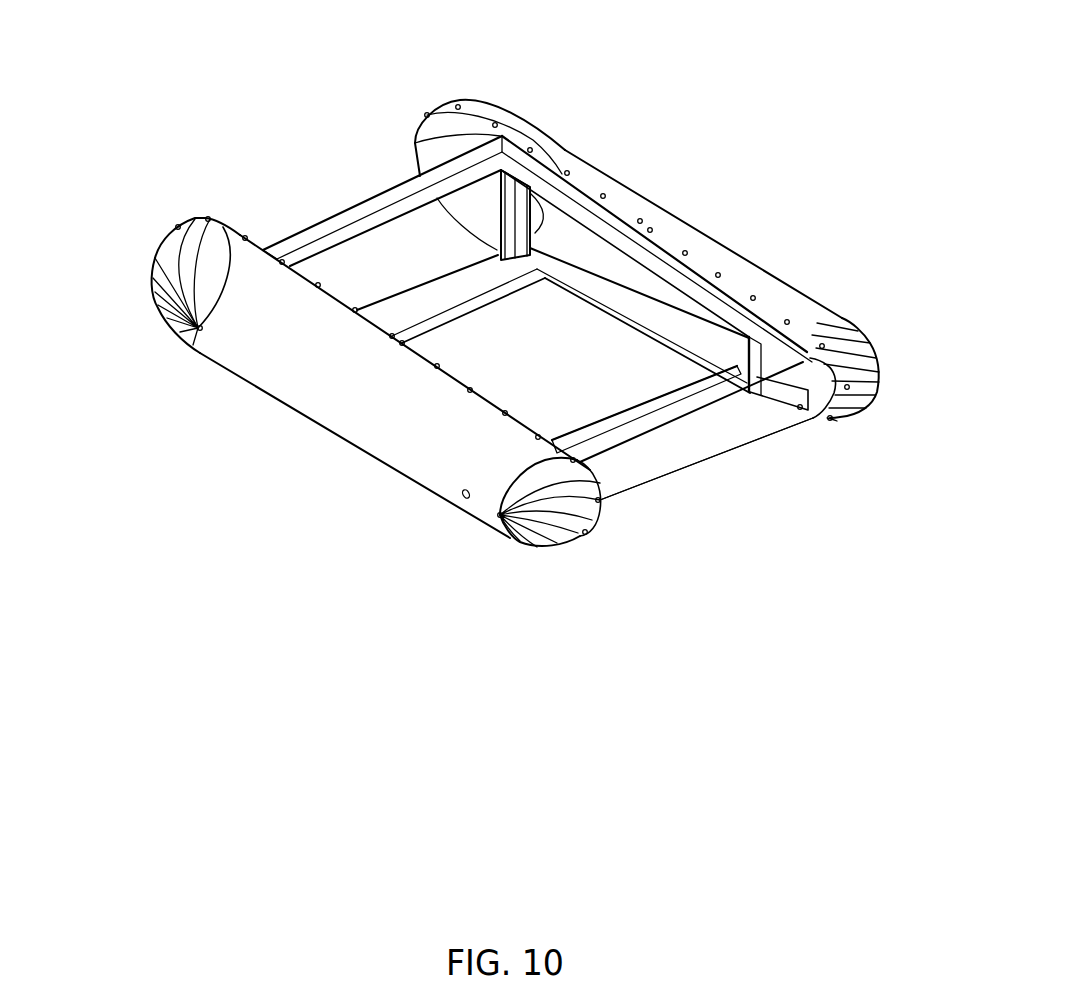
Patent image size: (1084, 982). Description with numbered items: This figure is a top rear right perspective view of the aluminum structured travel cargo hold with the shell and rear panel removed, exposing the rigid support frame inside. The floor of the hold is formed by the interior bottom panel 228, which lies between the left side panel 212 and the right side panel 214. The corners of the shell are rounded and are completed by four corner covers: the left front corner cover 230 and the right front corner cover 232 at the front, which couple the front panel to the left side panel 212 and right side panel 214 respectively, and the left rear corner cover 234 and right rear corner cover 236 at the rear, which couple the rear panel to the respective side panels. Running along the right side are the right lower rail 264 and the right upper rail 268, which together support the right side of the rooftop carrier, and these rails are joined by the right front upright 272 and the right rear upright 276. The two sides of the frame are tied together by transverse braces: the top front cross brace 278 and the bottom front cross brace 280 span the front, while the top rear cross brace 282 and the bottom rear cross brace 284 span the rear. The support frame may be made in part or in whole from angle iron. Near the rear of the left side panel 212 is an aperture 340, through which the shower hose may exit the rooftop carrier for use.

The left side panel 212 is at (272, 383).
The right side panel 214 is at (710, 267).
The interior bottom panel 228 is at (589, 378).
The left front corner cover 230 is at (155, 304).
The right front corner cover 232 is at (487, 117).
The left rear corner cover 234 is at (571, 528).
The right rear corner cover 236 is at (840, 378).
The right lower rail 264 is at (633, 313).
The right upper rail 268 is at (618, 243).
The right front upright 272 is at (520, 220).
The right rear upright 276 is at (757, 356).
The top front cross brace 278 is at (312, 240).
The bottom front cross brace 280 is at (473, 293).
The top rear cross brace 282 is at (730, 400).
The bottom rear cross brace 284 is at (668, 478).
The aperture 340 is at (461, 496).